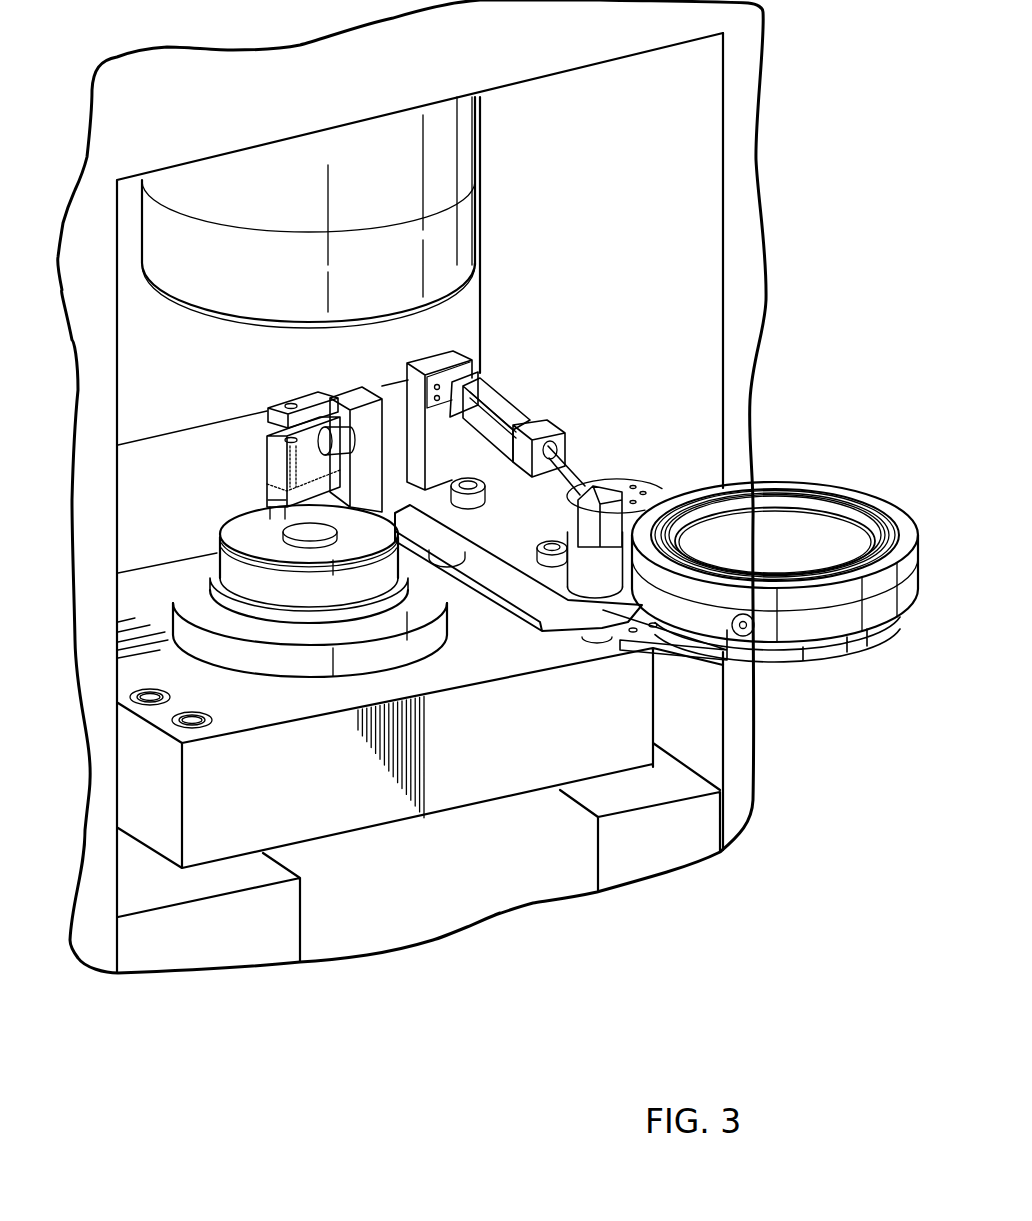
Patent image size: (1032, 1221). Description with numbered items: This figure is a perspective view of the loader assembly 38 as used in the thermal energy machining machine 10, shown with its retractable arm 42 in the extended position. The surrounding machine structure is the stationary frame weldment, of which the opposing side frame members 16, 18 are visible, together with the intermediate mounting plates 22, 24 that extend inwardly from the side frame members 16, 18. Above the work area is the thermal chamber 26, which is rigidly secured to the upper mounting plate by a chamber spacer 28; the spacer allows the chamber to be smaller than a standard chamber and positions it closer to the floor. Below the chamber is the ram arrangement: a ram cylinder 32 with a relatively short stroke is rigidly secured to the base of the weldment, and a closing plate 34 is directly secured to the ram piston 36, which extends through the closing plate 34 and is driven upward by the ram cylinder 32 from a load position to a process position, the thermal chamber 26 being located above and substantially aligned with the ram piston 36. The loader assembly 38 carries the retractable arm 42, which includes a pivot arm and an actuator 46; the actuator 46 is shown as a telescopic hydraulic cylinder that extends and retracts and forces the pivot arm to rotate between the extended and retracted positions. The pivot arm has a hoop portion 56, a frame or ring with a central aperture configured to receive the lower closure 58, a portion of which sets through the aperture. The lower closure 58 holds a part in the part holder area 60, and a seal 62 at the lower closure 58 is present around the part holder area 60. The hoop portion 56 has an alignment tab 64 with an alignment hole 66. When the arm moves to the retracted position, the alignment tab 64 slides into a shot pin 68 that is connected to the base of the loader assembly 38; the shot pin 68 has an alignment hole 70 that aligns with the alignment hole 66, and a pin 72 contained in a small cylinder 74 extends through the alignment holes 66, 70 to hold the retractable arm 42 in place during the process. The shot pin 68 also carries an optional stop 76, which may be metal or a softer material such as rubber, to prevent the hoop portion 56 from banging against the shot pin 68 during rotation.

The thermal energy machining (TEM) machine 10 is at (846, 237).
The side frame member 16 is at (90, 484).
The side frame member 18 is at (740, 405).
The intermediate mounting plate 22 is at (178, 938).
The intermediate mounting plate 24 is at (662, 848).
The thermal chamber 26 is at (163, 238).
The chamber spacer 28 is at (463, 132).
The ram cylinder 32 is at (443, 880).
The closing plate 34 is at (147, 792).
The ram piston 36 is at (232, 566).
The loader assembly 38 is at (479, 641).
The retractable arm 42 is at (607, 437).
The actuator 46 is at (517, 412).
The hoop portion 56 is at (478, 384).
The lower closure 58 is at (765, 481).
The part holder area 60 is at (761, 552).
The seal 62 is at (877, 517).
The alignment tab 64 is at (677, 653).
The alignment hole 66 is at (620, 640).
The shot pin 68 is at (267, 453).
The alignment hole 70 is at (289, 405).
The pin 72 is at (288, 439).
The small cylinder 74 is at (267, 502).
The stop 76 is at (338, 430).